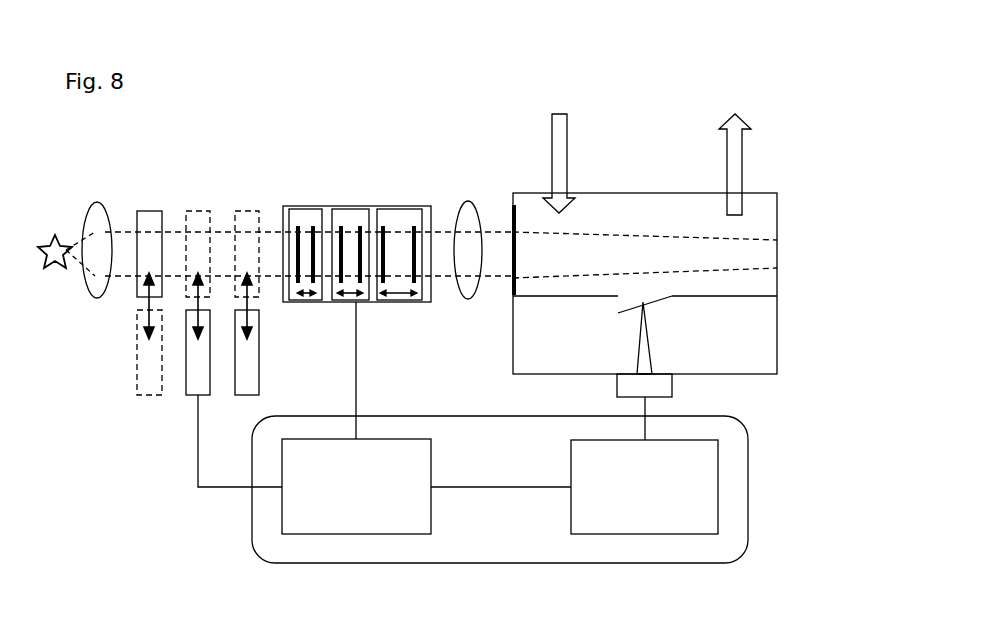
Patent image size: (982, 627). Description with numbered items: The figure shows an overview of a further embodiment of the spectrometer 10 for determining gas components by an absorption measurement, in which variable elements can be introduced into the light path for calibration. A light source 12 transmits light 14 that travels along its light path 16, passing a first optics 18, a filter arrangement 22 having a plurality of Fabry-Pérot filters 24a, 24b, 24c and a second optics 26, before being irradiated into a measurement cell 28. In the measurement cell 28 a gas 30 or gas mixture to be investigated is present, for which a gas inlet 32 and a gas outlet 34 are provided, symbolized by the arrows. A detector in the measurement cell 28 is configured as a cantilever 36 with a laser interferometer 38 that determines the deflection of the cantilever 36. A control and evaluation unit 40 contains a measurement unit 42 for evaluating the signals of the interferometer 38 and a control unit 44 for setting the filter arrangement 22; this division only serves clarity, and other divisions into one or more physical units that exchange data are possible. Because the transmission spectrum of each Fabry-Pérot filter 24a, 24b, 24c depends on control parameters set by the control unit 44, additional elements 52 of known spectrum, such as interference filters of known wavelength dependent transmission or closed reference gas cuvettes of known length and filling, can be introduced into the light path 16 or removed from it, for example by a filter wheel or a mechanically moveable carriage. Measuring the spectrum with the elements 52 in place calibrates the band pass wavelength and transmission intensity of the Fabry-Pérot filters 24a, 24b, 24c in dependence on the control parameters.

The spectrometer 10 is at (617, 78).
The light source 12 is at (48, 262).
The light 14 is at (80, 260).
The light path 16 is at (130, 275).
The first optics 18 is at (93, 218).
The filter arrangement 22 is at (375, 270).
The Fabry-Pérot filter 24a is at (303, 297).
The Fabry-Pérot filter 24b is at (363, 298).
The Fabry-Pérot filter 24c is at (408, 295).
The second optics 26 is at (467, 218).
The measurement cell 28 is at (777, 290).
The gas 30 is at (658, 218).
The gas inlet 32 is at (555, 147).
The gas outlet 34 is at (737, 165).
The cantilever 36 is at (655, 303).
The interferometer 38 is at (660, 390).
The control and evaluation unit 40 is at (745, 518).
The measurement unit 42 is at (687, 487).
The control unit 44 is at (305, 497).
The elements 52 is at (152, 387).